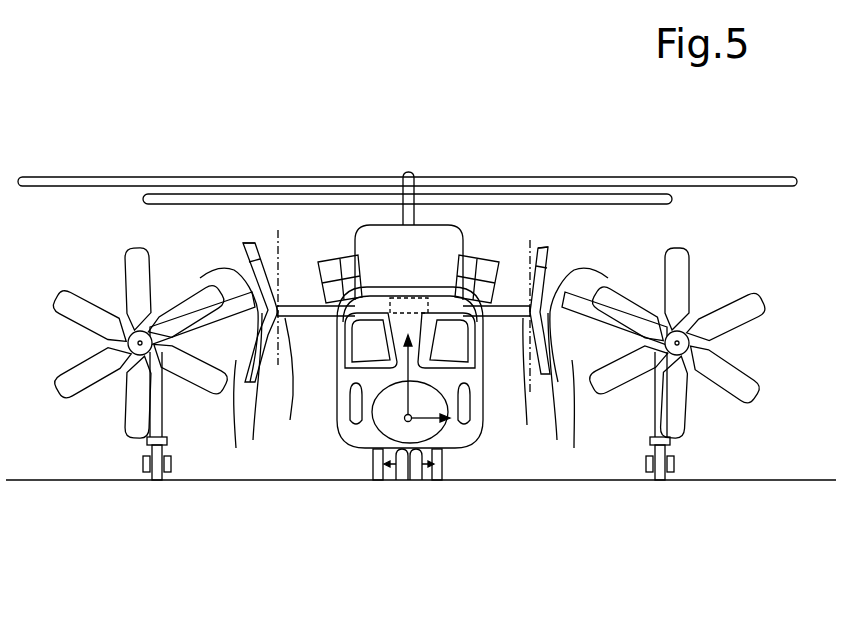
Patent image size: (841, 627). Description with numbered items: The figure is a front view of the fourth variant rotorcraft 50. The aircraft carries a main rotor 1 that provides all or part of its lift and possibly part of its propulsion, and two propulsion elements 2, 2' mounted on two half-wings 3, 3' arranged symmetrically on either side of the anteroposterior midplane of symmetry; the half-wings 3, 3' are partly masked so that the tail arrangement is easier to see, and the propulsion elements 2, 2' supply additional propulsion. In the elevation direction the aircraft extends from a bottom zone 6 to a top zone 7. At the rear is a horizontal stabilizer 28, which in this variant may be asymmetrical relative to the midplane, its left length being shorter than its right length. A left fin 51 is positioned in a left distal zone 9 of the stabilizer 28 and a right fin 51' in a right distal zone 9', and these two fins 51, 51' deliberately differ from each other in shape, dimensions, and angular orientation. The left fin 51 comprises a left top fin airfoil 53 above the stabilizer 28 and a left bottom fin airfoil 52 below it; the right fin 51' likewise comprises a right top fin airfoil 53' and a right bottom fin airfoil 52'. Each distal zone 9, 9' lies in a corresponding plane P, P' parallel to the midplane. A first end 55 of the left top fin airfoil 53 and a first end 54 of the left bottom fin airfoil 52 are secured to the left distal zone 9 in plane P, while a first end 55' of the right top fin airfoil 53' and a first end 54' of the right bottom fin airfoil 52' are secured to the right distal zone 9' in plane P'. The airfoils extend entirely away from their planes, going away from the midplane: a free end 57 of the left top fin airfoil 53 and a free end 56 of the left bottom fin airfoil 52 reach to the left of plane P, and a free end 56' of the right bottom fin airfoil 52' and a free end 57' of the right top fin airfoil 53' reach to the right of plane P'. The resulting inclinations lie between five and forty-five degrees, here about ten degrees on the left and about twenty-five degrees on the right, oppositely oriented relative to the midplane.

The main rotor 1 is at (708, 176).
The propulsion element 2 is at (677, 339).
The propulsion element 2' is at (140, 339).
The half-wing 3 is at (599, 309).
The half-wing 3' is at (212, 308).
The bottom zone 6 is at (407, 503).
The top zone 7 is at (410, 153).
The left distal zone 9 is at (494, 249).
The right distal zone 9' is at (323, 249).
The horizontal stabilizer 28 is at (313, 318).
The fourth variant rotorcraft 50 is at (133, 147).
The left fin 51 is at (596, 199).
The right fin 51' is at (209, 194).
The left bottom fin airfoil 52 is at (601, 416).
The right bottom fin airfoil 52' is at (209, 414).
The left top fin airfoil 53 is at (514, 185).
The right top fin airfoil 53' is at (292, 182).
The first end of the left bottom fin airfoil 54 is at (522, 385).
The first end of the right bottom fin airfoil 54' is at (288, 381).
The first end of the left top fin airfoil 55 is at (614, 365).
The first end of the right top fin airfoil 55' is at (202, 363).
The free end of the left bottom fin airfoil 56 is at (559, 395).
The free end of the right bottom fin airfoil 56' is at (257, 395).
The free end of the left top fin airfoil 57 is at (547, 230).
The free end of the right top fin airfoil 57' is at (266, 236).
The plane P is at (486, 265).
The plane P' is at (328, 251).